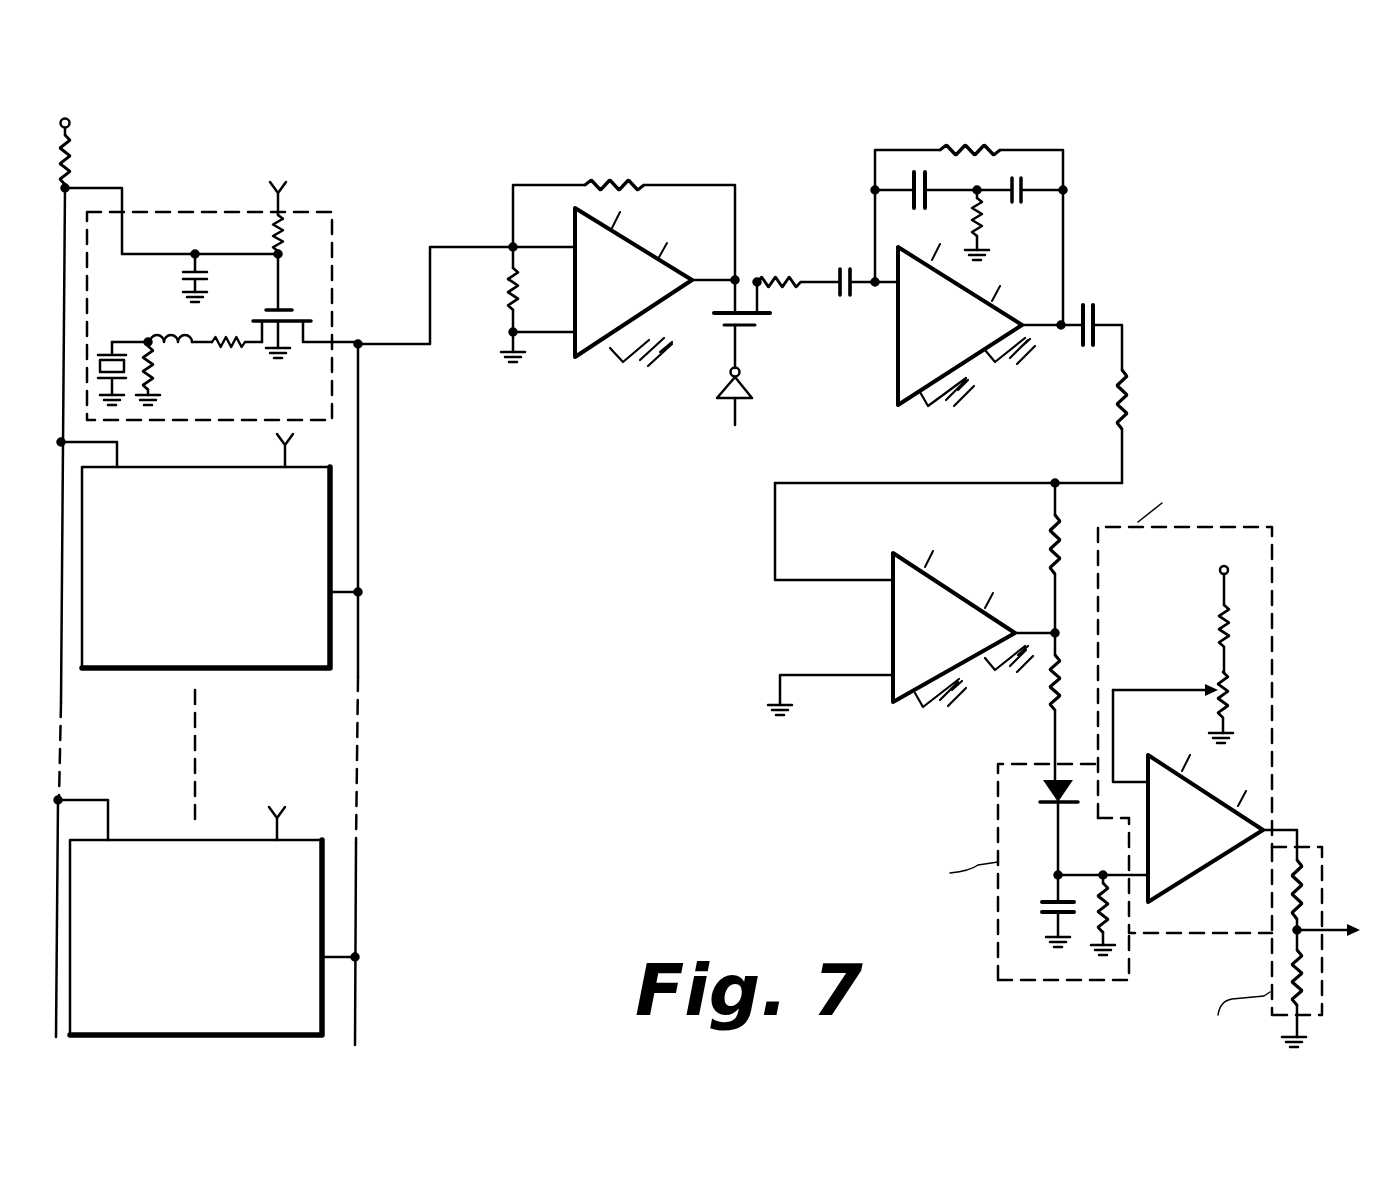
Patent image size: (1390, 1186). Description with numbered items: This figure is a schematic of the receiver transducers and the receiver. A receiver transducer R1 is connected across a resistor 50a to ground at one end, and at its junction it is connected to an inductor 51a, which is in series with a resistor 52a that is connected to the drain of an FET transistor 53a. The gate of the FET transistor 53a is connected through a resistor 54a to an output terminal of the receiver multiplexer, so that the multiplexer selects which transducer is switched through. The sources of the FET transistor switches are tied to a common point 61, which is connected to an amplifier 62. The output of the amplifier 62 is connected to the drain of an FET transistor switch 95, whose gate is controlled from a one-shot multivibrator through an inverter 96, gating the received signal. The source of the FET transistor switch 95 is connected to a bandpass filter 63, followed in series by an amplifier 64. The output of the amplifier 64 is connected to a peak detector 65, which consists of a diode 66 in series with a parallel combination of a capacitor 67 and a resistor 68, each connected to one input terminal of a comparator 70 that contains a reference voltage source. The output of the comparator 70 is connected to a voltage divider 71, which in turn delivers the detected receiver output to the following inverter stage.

The receiver transducer R1 is at (88, 386).
The resistor 50a is at (156, 372).
The inductor 51a is at (188, 337).
The resistor 52a is at (222, 342).
The FET transistor 53a is at (298, 318).
The resistor 54a is at (292, 236).
The common point 61 is at (376, 327).
The amplifier 62 is at (605, 364).
The bandpass filter 63 is at (880, 401).
The amplifier 64 is at (810, 631).
The peak detector 65 is at (992, 878).
The diode 66 is at (1046, 806).
The capacitor 67 is at (1040, 911).
The resistor 68 is at (1116, 910).
The comparator 70 is at (1275, 637).
The voltage divider 71 is at (1322, 1018).
The FET transistor switch 95 is at (777, 337).
The inverter 96 is at (748, 382).